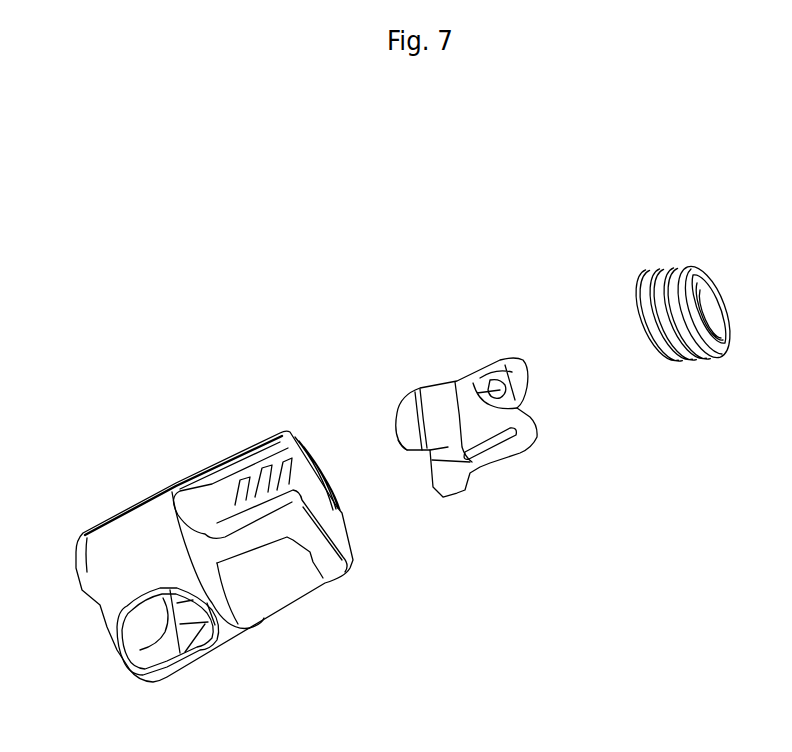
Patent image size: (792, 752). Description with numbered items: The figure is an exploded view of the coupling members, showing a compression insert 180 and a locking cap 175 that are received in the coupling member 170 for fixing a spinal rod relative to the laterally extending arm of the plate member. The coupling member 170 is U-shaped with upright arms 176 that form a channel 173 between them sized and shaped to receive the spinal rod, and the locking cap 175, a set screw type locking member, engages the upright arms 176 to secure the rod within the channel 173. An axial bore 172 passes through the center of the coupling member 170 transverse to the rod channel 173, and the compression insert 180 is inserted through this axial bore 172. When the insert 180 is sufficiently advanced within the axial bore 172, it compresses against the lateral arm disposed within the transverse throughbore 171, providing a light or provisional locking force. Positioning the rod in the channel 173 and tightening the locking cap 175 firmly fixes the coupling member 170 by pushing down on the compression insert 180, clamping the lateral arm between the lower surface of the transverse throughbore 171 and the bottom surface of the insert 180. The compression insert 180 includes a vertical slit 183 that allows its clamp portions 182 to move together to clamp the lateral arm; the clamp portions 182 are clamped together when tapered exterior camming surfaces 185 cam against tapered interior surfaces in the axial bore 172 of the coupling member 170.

The coupling member 170 is at (265, 640).
The transverse throughbore 171 is at (170, 645).
The axial bore 172 is at (347, 536).
The channel 173 is at (210, 516).
The locking cap 175 is at (703, 363).
The upright arms 176 is at (263, 449).
The compression insert 180 is at (453, 395).
The clamp portions 182 is at (407, 440).
The vertical slit 183 is at (499, 446).
The tapered exterior camming surfaces 185 is at (397, 407).